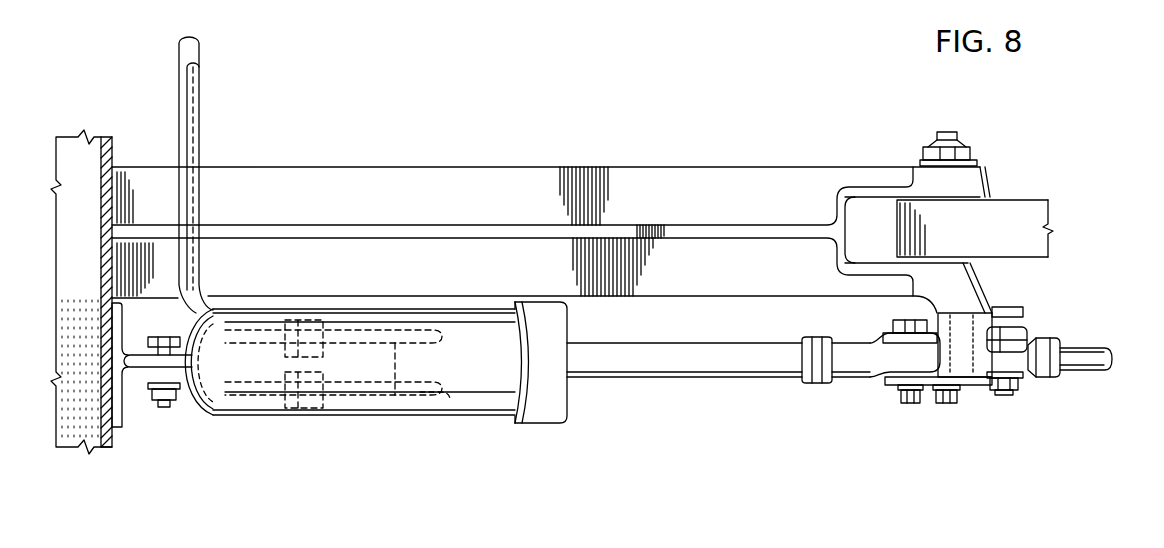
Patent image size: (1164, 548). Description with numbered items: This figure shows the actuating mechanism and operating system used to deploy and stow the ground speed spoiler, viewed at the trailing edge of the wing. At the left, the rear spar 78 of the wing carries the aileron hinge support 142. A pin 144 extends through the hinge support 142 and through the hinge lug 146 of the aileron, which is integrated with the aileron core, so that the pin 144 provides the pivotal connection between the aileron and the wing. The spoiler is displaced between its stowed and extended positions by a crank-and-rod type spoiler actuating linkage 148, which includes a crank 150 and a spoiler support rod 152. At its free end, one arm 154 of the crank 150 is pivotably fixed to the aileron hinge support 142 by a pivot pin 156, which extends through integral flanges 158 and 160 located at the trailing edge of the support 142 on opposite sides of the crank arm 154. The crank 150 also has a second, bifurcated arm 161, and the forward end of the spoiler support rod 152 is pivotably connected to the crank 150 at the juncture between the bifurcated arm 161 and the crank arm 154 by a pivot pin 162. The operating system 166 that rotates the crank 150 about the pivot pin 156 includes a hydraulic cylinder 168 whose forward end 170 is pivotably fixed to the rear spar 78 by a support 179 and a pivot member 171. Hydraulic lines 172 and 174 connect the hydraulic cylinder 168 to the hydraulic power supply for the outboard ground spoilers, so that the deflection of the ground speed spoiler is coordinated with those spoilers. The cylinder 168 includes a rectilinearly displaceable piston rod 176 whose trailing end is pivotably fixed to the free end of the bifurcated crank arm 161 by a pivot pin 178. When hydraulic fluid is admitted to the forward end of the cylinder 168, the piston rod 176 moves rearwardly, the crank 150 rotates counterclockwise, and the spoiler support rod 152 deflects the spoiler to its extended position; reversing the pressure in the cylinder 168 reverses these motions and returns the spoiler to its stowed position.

The rear spar 78 is at (115, 154).
The aileron hinge support 142 is at (831, 216).
The pin 144 is at (952, 132).
The hinge lug 146 is at (990, 205).
The spoiler actuating linkage 148 is at (997, 400).
The crank 150 is at (880, 395).
The spoiler support rod 152 is at (1097, 366).
The crank arm 154 is at (1022, 338).
The pivot pin 156 is at (1013, 396).
The integral flange 158 is at (1033, 372).
The integral flange 160 is at (1025, 315).
The bifurcated arm 161 is at (882, 382).
The pivot pin 162 is at (947, 405).
The operating system 166 is at (278, 417).
The hydraulic cylinder 168 is at (325, 408).
The forward end 170 is at (188, 416).
The pivot member 171 is at (158, 408).
The hydraulic line 172 is at (428, 408).
The hydraulic line 174 is at (395, 395).
The piston rod 176 is at (660, 378).
The pivot pin 178 is at (908, 405).
The support 179 is at (138, 428).